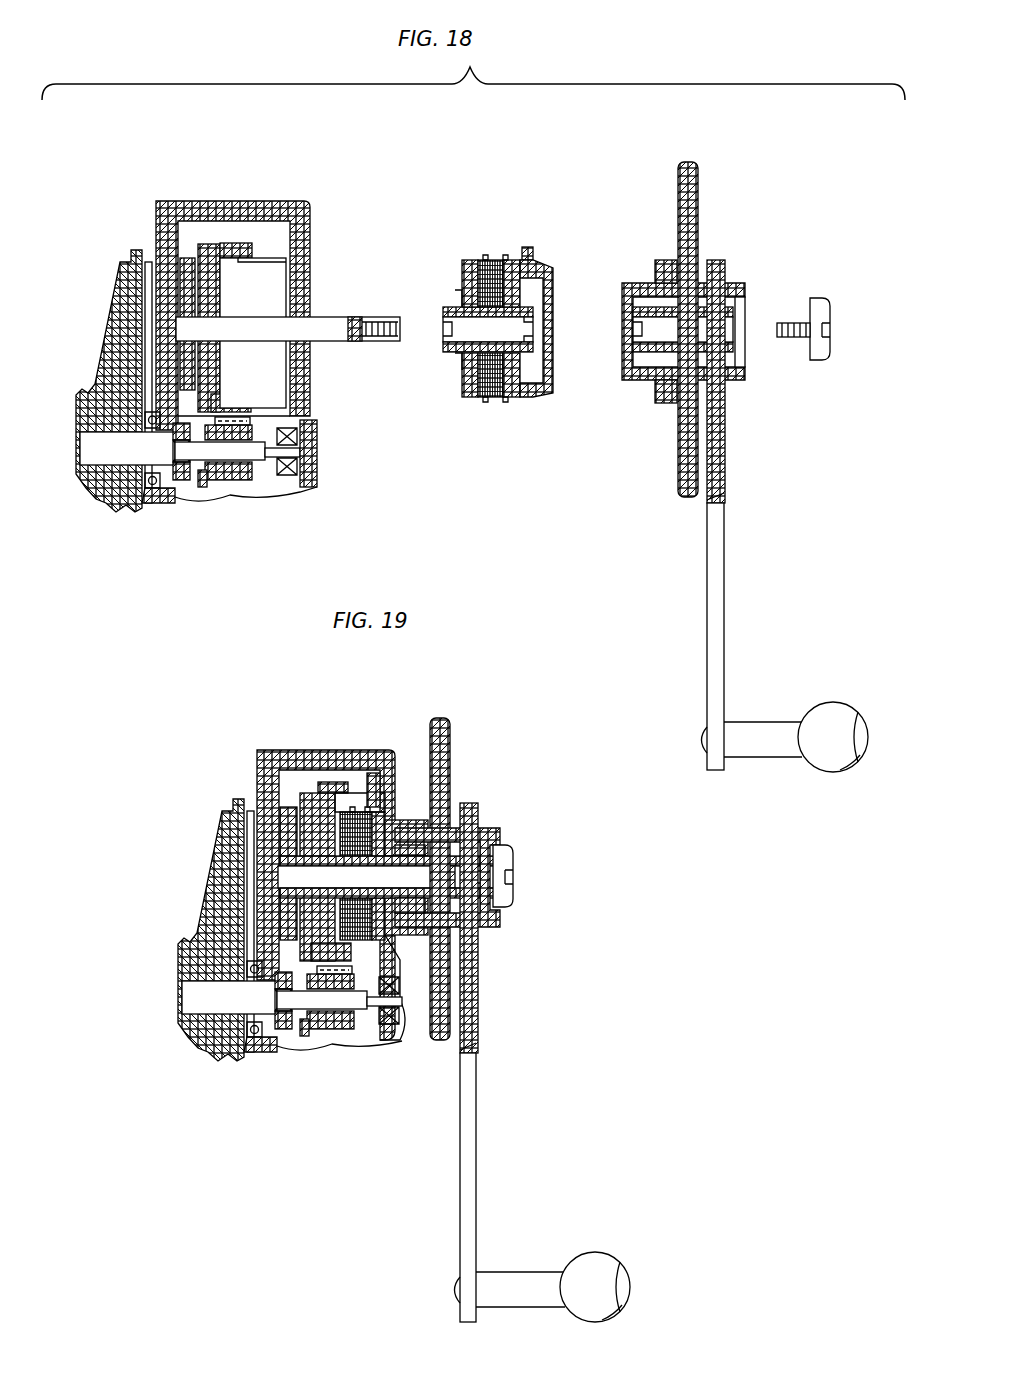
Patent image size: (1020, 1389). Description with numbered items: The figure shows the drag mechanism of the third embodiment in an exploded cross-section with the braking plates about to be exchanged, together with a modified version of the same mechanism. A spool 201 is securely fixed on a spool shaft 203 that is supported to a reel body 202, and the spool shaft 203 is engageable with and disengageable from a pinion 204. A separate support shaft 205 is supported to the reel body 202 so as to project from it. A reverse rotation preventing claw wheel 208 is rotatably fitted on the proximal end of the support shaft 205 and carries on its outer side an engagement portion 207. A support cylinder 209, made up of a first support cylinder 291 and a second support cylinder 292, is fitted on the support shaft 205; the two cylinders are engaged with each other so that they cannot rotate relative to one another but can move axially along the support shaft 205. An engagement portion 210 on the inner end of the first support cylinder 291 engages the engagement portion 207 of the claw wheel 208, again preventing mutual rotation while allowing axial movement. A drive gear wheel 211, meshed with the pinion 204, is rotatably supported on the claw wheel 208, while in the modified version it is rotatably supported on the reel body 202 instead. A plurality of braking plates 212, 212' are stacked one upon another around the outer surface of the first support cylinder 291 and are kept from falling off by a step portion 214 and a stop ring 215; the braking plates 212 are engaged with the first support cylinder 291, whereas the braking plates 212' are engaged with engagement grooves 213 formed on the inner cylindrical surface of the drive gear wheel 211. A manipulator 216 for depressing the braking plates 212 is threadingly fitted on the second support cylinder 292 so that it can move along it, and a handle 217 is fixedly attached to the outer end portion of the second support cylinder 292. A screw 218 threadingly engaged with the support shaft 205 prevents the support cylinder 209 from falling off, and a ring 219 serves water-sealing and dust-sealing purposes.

In FIG. 18, the spool 201 is at (122, 302).
In FIG. 19, the spool 201 is at (203, 930).
In FIG. 18, the reel body 202 is at (158, 210).
In FIG. 19, the reel body 202 is at (286, 749).
In FIG. 18, the spool shaft 203 is at (98, 468).
In FIG. 19, the spool shaft 203 is at (229, 1053).
In FIG. 18, the pinion 204 is at (228, 470).
In FIG. 19, the pinion 204 is at (339, 1050).
In FIG. 18, the support shaft 205 is at (356, 317).
In FIG. 19, the support shaft 205 is at (500, 915).
In FIG. 18, the engagement portion 207 is at (210, 244).
In FIG. 19, the engagement portion 207 is at (302, 908).
In FIG. 18, the reverse rotation preventing claw wheel 208 is at (188, 257).
In FIG. 19, the reverse rotation preventing claw wheel 208 is at (292, 807).
In FIG. 19, the support cylinder 209 is at (498, 908).
In FIG. 18, the engagement portion 210 is at (443, 306).
In FIG. 19, the engagement portion 210 is at (282, 856).
In FIG. 18, the drive gear wheel 211 is at (236, 243).
In FIG. 19, the drive gear wheel 211 is at (348, 961).
In FIG. 18, the braking plates 212 is at (493, 369).
In FIG. 19, the braking plates 212 is at (368, 810).
In FIG. 18, the braking plates 212' is at (495, 291).
In FIG. 19, the braking plates 212' is at (348, 762).
In FIG. 18, the engagement grooves 213 is at (262, 272).
In FIG. 19, the engagement grooves 213 is at (373, 800).
In FIG. 18, the step portion 214 is at (464, 296).
In FIG. 19, the step portion 214 is at (297, 1043).
In FIG. 18, the stop ring 215 is at (526, 305).
In FIG. 19, the stop ring 215 is at (418, 990).
In FIG. 18, the manipulator 216 is at (700, 205).
In FIG. 19, the manipulator 216 is at (441, 718).
In FIG. 18, the handle 217 is at (726, 575).
In FIG. 19, the handle 217 is at (480, 1031).
In FIG. 18, the screw 218 is at (815, 298).
In FIG. 19, the screw 218 is at (514, 862).
In FIG. 18, the ring 219 is at (530, 247).
In FIG. 19, the ring 219 is at (396, 800).
In FIG. 18, the first support cylinder 291 is at (455, 353).
In FIG. 19, the first support cylinder 291 is at (402, 836).
In FIG. 18, the second support cylinder 292 is at (722, 326).
In FIG. 19, the second support cylinder 292 is at (480, 824).